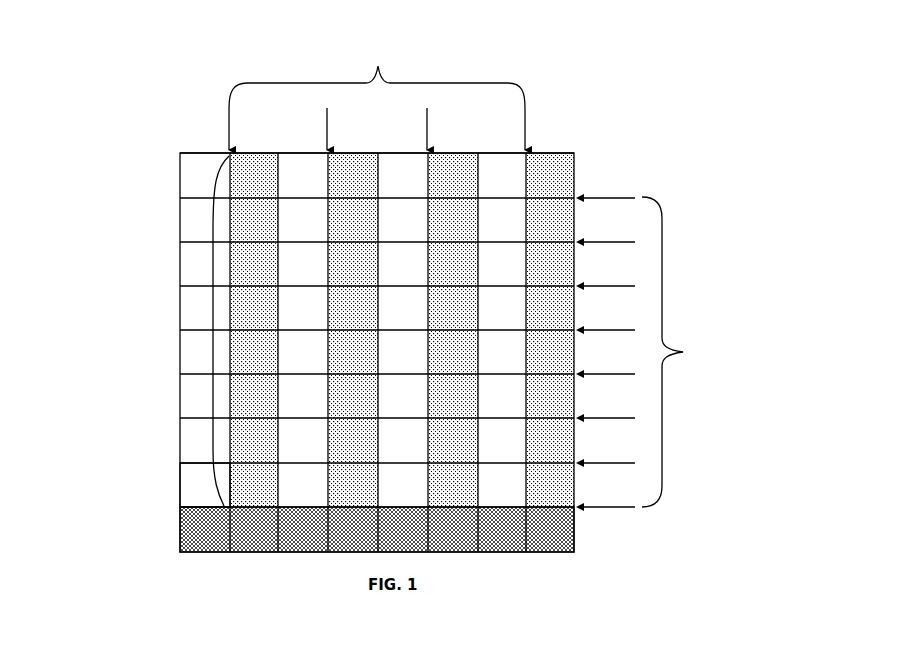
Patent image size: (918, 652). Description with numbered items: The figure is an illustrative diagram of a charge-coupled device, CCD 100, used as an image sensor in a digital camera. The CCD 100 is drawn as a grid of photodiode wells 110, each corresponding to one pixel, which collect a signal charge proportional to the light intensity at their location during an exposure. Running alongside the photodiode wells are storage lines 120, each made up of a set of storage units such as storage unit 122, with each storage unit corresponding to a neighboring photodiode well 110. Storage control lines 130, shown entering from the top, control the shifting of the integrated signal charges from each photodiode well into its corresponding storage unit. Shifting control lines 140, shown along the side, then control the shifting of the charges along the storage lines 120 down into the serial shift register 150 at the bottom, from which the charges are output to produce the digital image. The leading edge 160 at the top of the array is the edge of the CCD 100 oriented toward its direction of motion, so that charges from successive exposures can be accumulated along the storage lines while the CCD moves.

The charge-coupled device (CCD) 100 is at (90, 20).
The photodiode well 110 is at (190, 181).
The storage line 120 is at (213, 330).
The storage unit 122 is at (246, 474).
The storage control lines 130 is at (377, 96).
The shifting control lines 140 is at (695, 352).
The serial shift register 150 is at (575, 533).
The leading edge 160 is at (178, 152).